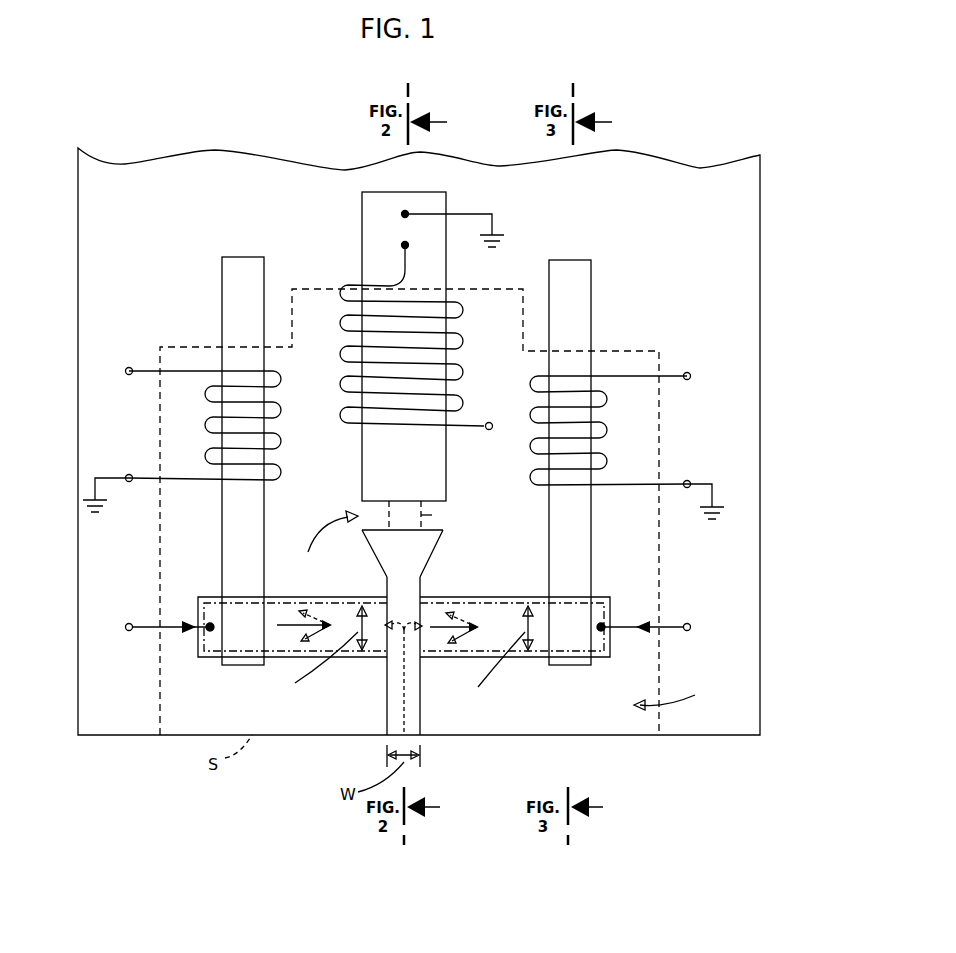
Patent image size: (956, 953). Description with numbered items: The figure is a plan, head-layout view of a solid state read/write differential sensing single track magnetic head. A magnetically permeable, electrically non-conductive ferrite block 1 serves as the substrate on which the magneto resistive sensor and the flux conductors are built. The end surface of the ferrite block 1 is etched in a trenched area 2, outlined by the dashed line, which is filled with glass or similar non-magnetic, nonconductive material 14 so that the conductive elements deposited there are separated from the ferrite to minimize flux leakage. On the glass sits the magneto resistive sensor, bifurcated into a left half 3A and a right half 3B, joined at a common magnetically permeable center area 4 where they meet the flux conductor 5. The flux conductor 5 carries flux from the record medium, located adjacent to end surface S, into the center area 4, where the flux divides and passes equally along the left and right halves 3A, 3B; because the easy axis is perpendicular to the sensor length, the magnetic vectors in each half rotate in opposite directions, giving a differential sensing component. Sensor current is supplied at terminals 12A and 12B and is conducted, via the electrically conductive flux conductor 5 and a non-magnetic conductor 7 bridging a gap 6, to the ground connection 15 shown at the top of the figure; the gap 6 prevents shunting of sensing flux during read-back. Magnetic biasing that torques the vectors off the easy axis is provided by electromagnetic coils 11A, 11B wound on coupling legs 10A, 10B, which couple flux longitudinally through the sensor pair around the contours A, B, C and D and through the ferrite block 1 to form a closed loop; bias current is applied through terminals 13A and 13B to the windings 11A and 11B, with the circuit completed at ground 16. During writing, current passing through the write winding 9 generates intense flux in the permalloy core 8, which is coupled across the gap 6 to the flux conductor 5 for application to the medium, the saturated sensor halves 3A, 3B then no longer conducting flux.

The ferrite block 1 is at (680, 175).
The trenched area 2 is at (659, 440).
The left half of magneto resistive sensor 3A is at (337, 612).
The right half of magneto resistive sensor 3B is at (475, 610).
The center area 4 is at (406, 626).
The flux conductor 5 is at (410, 683).
The gap 6 is at (325, 536).
The non-magnetic conductor 7 is at (447, 539).
The core 8 is at (437, 465).
The write winding 9 is at (464, 344).
The coupling leg 10A is at (262, 517).
The coupling leg 10B is at (592, 540).
The electromagnetic coil 11A is at (205, 425).
The electromagnetic coil 11B is at (607, 428).
The sensor current terminal 12A is at (151, 618).
The sensor current terminal 12B is at (690, 623).
The bias current terminal 13A is at (110, 372).
The bias current terminal 13B is at (688, 372).
The non-magnetic nonconductive material 14 is at (674, 697).
The core ground terminal 15 is at (497, 222).
The ground 16 is at (690, 480).